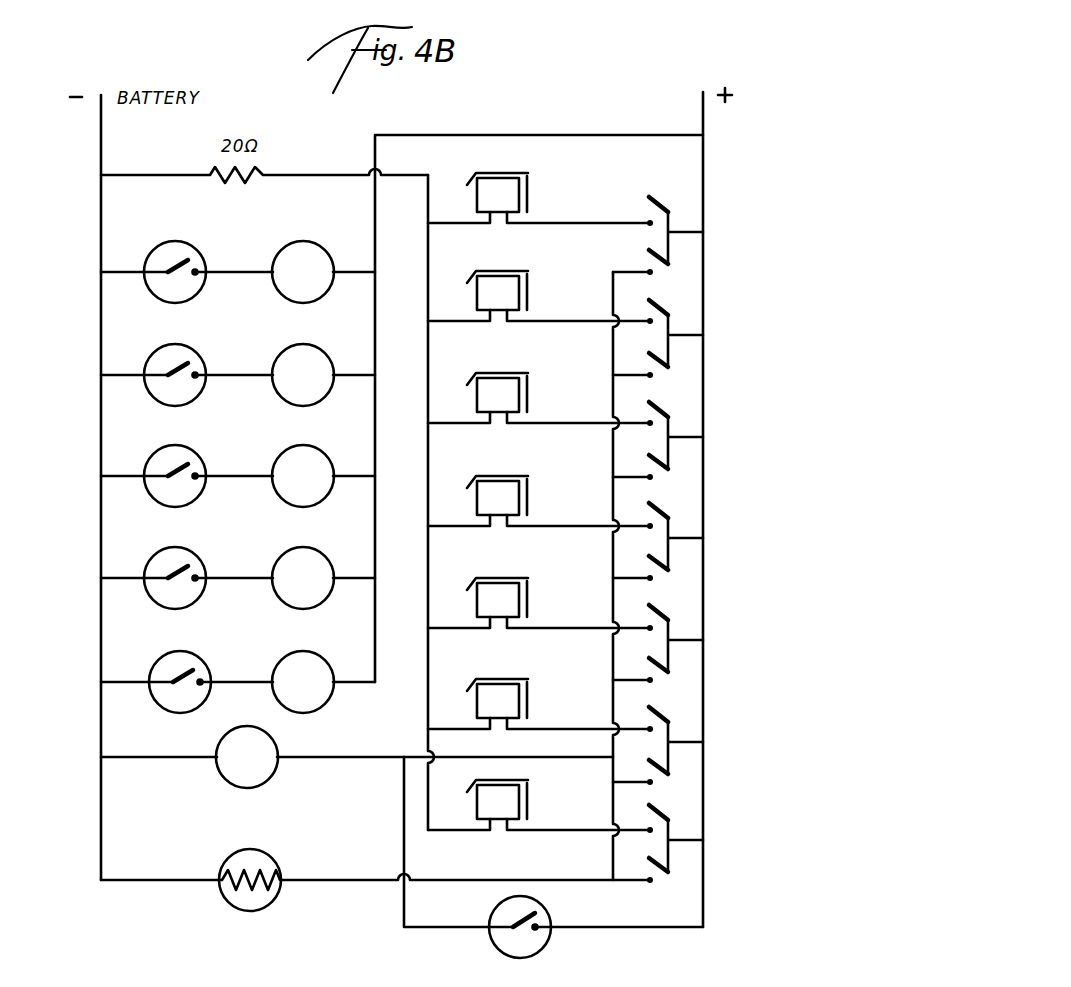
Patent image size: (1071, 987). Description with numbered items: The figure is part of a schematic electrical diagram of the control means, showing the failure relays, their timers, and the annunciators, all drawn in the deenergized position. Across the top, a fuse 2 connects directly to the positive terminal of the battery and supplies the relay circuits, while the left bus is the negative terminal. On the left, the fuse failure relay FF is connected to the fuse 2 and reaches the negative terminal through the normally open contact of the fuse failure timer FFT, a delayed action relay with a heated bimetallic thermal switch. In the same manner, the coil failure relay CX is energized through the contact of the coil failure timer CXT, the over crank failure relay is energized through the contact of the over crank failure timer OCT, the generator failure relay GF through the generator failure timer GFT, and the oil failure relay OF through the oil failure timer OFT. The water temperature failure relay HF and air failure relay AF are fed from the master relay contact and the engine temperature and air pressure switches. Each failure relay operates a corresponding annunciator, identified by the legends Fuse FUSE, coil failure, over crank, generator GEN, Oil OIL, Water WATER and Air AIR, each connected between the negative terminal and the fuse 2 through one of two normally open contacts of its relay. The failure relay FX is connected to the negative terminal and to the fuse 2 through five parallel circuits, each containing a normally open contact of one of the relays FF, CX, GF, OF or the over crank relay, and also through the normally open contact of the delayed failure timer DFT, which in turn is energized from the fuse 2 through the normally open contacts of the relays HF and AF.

The fuse 2 is at (686, 507).
The fuse failure timer FFT is at (204, 223).
The fuse failure relay FF is at (324, 246).
The coil failure timer CXT is at (205, 352).
The coil failure relay CX is at (334, 347).
The over crank failure timer OCT is at (205, 454).
The generator failure timer GFT is at (205, 556).
The generator failure relay GF is at (340, 552).
The oil failure timer OFT is at (218, 653).
The oil failure relay OF is at (328, 652).
The water temperature failure relay HF is at (676, 724).
The air failure relay AF is at (676, 826).
The annunciator FUSE is at (533, 204).
The annunciator GEN is at (542, 484).
The annunciator OIL is at (542, 586).
The annunciator WATER is at (550, 710).
The annunciator AIR is at (538, 799).
The failure relay FX is at (268, 776).
The delayed failure timer DFT is at (232, 908).